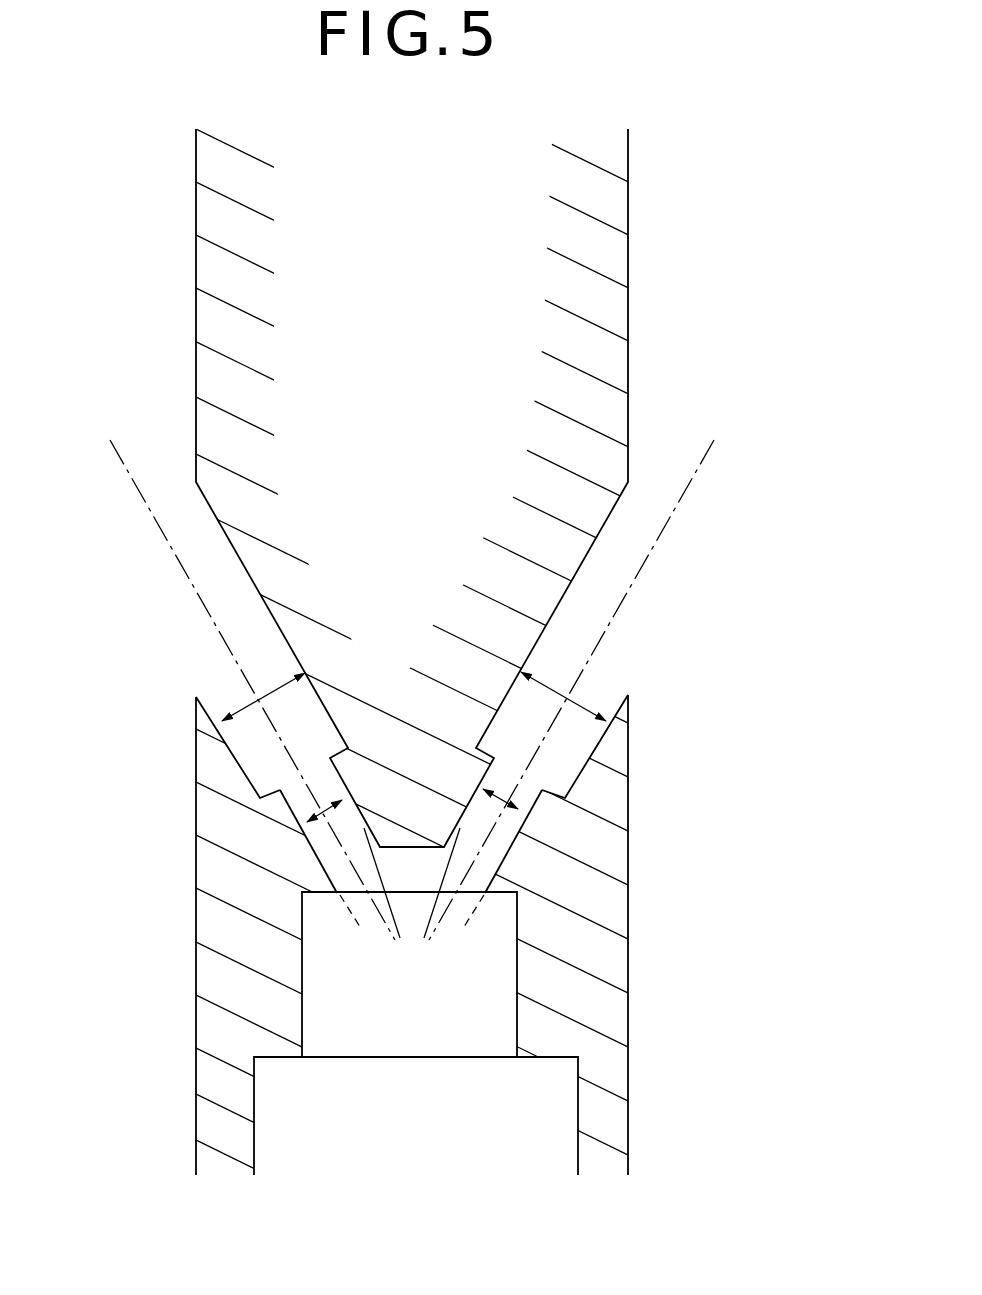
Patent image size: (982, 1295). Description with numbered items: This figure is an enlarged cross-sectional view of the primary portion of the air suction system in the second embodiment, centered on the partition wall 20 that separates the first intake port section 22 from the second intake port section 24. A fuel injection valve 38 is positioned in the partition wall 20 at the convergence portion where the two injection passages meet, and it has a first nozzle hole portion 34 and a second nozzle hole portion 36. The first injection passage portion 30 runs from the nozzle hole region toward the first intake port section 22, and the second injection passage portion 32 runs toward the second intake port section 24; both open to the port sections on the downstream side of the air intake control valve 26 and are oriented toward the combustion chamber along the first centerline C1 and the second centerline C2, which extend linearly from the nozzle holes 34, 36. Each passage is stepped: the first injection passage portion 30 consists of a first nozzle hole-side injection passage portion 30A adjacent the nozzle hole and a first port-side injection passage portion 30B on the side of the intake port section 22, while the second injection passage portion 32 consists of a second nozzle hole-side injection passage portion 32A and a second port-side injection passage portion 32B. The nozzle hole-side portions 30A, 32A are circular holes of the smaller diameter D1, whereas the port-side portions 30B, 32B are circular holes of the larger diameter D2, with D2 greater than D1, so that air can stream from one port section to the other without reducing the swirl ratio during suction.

The partition wall 20 is at (613, 203).
The first intake port section 22 is at (770, 353).
The second intake port section 24 is at (100, 351).
The air intake control valve 26 is at (420, 872).
The first injection passage portion 30 is at (590, 777).
The first nozzle hole-side injection passage portion 30A is at (503, 828).
The first port-side injection passage portion 30B is at (578, 733).
The second injection passage portion 32 is at (245, 777).
The second nozzle hole-side injection passage portion 32A is at (330, 857).
The second port-side injection passage portion 32B is at (247, 740).
The first nozzle hole portion 34 is at (440, 925).
The second nozzle hole portion 36 is at (385, 925).
The fuel injection valve 38 is at (277, 1139).
The first centerline C1 is at (688, 500).
The second centerline C2 is at (140, 497).
The smaller diameter D1 is at (712, 850).
The larger diameter D2 is at (712, 660).